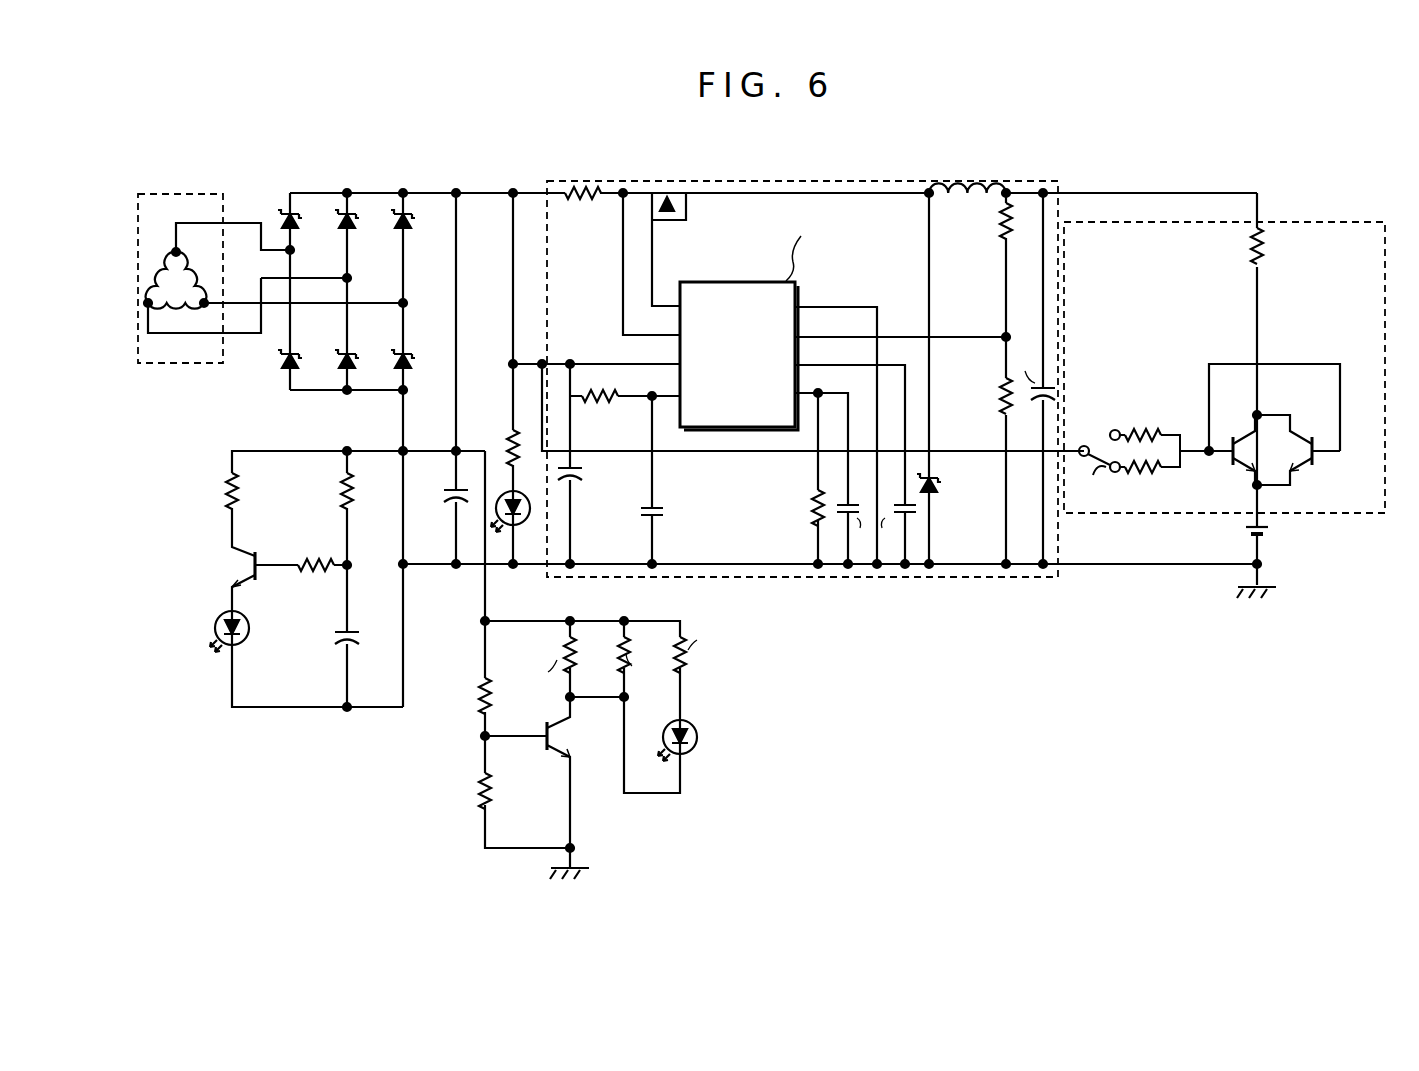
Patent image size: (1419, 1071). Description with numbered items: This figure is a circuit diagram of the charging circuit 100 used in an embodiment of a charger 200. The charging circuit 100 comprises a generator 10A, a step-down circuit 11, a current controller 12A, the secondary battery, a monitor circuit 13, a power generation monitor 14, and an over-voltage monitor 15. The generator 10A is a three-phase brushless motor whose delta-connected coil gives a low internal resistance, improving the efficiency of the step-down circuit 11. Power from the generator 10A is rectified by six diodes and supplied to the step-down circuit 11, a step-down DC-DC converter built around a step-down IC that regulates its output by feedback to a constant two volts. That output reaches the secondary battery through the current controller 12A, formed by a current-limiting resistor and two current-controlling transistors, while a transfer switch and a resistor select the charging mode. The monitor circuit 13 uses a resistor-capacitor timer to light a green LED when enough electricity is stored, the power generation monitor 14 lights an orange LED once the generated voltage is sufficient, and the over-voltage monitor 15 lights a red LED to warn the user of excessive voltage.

The generator 10A is at (186, 192).
The step-down circuit 11 is at (962, 580).
The current controller 12A is at (1333, 516).
The monitor circuit 13 is at (249, 730).
The power generation monitor 14 is at (469, 583).
The over-voltage monitor 15 is at (720, 719).
The charging circuit 100 is at (855, 637).
The charger 200 is at (953, 116).